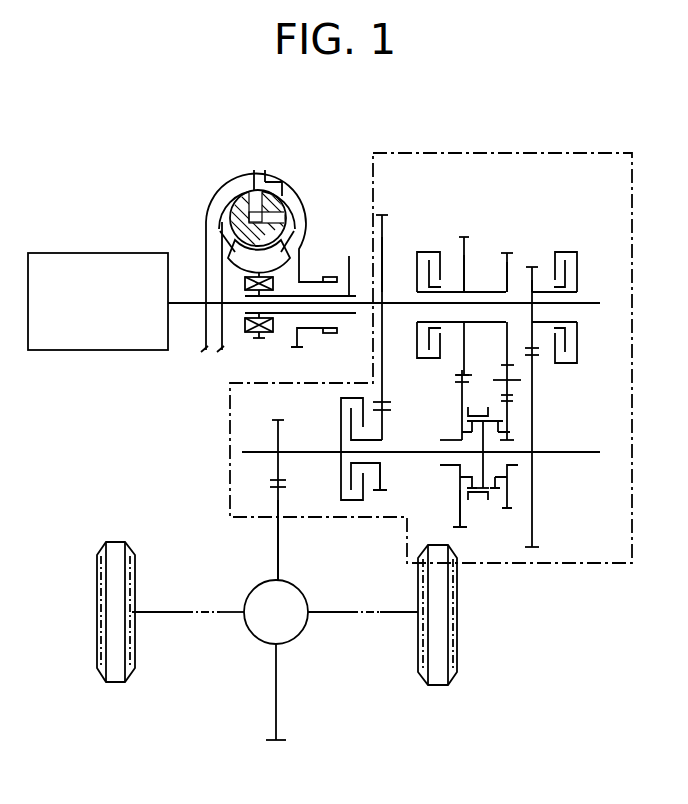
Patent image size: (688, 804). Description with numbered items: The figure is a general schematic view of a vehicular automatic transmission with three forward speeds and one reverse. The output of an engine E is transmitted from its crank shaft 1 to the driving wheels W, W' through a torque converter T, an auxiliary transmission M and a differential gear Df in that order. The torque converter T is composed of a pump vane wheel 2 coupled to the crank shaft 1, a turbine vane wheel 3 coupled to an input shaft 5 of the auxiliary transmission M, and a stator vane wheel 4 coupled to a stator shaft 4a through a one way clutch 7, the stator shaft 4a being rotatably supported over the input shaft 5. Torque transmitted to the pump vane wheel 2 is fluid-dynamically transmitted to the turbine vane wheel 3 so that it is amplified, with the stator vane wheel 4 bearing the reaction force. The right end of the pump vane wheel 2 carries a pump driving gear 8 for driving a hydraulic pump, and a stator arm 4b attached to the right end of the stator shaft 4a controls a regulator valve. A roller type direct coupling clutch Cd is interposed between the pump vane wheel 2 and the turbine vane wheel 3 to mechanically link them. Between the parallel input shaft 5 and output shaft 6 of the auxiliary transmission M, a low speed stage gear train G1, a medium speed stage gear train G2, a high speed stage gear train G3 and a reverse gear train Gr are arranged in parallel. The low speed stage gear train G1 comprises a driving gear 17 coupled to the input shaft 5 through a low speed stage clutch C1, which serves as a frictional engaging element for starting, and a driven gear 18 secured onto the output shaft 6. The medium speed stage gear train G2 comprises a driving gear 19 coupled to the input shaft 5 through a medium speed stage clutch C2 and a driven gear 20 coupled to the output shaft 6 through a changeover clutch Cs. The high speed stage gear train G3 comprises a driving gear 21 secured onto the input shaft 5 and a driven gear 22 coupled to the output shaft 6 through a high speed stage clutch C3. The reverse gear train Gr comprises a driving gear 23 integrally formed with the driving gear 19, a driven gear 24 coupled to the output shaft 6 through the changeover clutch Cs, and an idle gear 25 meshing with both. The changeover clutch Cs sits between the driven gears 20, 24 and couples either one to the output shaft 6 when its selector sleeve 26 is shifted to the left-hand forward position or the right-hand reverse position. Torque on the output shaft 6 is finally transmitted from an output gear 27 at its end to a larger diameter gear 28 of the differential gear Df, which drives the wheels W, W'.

The crank shaft 1 is at (183, 307).
The pump vane wheel 2 is at (297, 213).
The turbine vane wheel 3 is at (229, 194).
The stator vane wheel 4 is at (279, 257).
The stator shaft 4a is at (338, 298).
The stator arm 4b is at (350, 256).
The input shaft 5 is at (286, 306).
The output shaft 6 is at (258, 454).
The one way clutch 7 is at (245, 283).
The pump driving gear 8 is at (328, 277).
The driving gear 17 is at (568, 251).
The driven gear 18 is at (533, 396).
The driving gear 19 is at (466, 270).
The driven gear 20 is at (457, 398).
The driving gear 21 is at (386, 239).
The driven gear 22 is at (383, 481).
The driving gear 23 is at (511, 267).
The driven gear 24 is at (508, 418).
The idle gear 25 is at (505, 371).
The selector sleeve 26 is at (478, 498).
The output gear 27 is at (278, 434).
The larger diameter gear 28 is at (280, 548).
The engine E is at (90, 314).
The torque converter T is at (250, 148).
The direct coupling clutch Cd is at (277, 192).
The auxiliary transmission M is at (487, 150).
The low speed stage gear train G1 is at (539, 269).
The medium speed stage gear train G2 is at (466, 233).
The high speed stage gear train G3 is at (384, 214).
The reverse gear train Gr is at (509, 248).
The low speed stage clutch C1 is at (578, 268).
The medium speed stage clutch C2 is at (461, 290).
The high speed stage clutch C3 is at (341, 477).
The changeover clutch Cs is at (488, 507).
The differential gear Df is at (296, 601).
The driving wheel W is at (116, 637).
The driving wheel W' is at (437, 640).